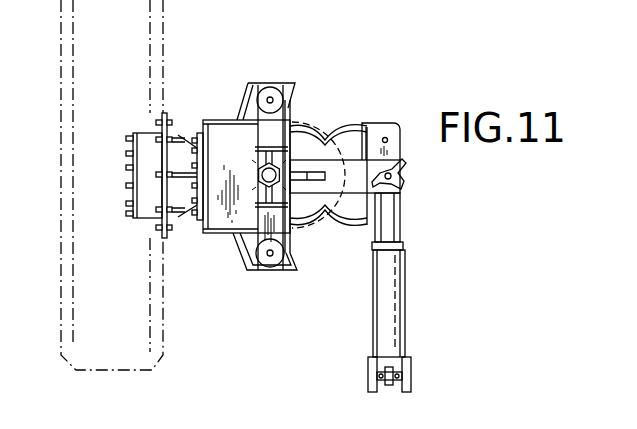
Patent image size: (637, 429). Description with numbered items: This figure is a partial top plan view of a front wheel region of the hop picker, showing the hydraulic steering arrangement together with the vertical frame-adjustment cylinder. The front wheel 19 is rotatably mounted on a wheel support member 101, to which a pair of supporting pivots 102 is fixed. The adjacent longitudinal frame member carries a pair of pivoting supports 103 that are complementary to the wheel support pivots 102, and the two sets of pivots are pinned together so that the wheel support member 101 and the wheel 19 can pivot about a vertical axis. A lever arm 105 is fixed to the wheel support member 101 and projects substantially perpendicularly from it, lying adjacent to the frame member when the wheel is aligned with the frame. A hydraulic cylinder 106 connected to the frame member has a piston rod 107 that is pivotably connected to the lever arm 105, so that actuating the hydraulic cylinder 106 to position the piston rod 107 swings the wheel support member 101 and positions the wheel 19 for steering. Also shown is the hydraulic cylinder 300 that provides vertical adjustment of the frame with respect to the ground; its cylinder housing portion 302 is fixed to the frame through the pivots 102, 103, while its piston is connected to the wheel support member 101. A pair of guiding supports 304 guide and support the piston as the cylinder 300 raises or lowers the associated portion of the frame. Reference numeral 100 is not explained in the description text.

The front wheel 19 is at (143, 372).
The wheel 100 is at (329, 128).
The wheel support member 101 is at (220, 240).
The supporting pivots 102 is at (301, 228).
The pivoting supports 103 is at (350, 122).
The lever arm 105 is at (349, 205).
The hydraulic cylinder 106 is at (400, 288).
The piston rod 107 is at (395, 218).
The hydraulic cylinder 300 is at (250, 172).
The cylinder housing portion 302 is at (304, 103).
The guiding supports 304 is at (264, 86).